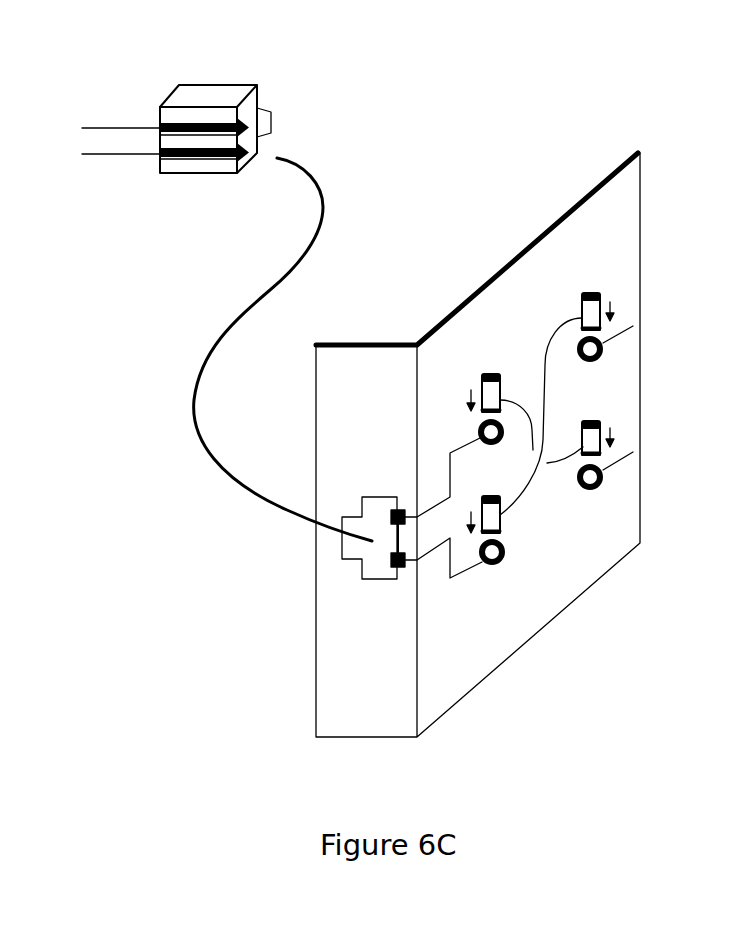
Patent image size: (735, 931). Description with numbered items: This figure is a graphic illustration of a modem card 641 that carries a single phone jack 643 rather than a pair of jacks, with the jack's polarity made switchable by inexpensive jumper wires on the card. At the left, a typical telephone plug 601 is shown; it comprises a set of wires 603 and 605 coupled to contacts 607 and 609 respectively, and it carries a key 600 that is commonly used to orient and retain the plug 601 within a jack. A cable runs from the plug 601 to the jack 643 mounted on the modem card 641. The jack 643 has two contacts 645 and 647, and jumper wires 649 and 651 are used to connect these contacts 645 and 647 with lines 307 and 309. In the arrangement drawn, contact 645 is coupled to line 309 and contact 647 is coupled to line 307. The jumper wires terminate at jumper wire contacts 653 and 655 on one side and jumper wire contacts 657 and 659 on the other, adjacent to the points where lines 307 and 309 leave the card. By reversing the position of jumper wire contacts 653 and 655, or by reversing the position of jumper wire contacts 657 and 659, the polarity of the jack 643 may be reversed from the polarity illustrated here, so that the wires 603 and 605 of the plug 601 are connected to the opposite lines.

The key 600 is at (287, 121).
The telephone plug 601 is at (243, 77).
The wire 603 is at (103, 120).
The wire 605 is at (103, 163).
The contact 607 is at (199, 118).
The contact 609 is at (199, 162).
The modem card 641 is at (550, 195).
The jack 643 is at (357, 493).
The contact 645 is at (405, 498).
The contact 647 is at (405, 582).
The jumper wire 649 is at (553, 323).
The jumper wire 651 is at (562, 477).
The jumper wire contact 653 is at (498, 370).
The jumper wire contact 655 is at (513, 535).
The jumper wire contact 657 is at (595, 287).
The jumper wire contact 659 is at (587, 413).
The line 307 is at (630, 335).
The line 309 is at (630, 460).